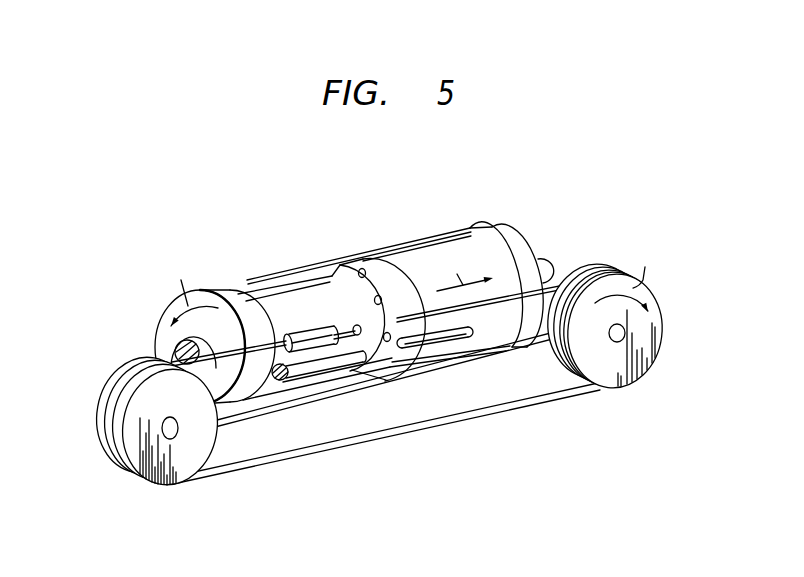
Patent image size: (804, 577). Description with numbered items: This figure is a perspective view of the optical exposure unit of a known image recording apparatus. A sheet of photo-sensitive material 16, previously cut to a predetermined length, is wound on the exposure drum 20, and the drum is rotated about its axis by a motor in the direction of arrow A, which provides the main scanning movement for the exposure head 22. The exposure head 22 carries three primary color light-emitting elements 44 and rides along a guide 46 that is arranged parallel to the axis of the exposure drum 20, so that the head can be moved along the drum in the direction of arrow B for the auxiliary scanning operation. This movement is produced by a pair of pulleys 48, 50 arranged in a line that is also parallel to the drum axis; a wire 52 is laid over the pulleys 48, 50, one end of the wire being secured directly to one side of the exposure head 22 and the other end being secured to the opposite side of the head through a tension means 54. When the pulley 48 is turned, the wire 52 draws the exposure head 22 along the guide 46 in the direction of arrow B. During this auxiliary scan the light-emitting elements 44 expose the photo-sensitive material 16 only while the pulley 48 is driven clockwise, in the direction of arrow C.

The photo-sensitive material 16 is at (425, 252).
The exposure drum 20 is at (517, 228).
The exposure head 22 is at (372, 268).
The light-emitting elements 44 is at (359, 268).
The guide 46 is at (443, 349).
The pulley 48 is at (648, 353).
The pulley 50 is at (173, 481).
The wire 52 is at (508, 406).
The tension means 54 is at (301, 330).